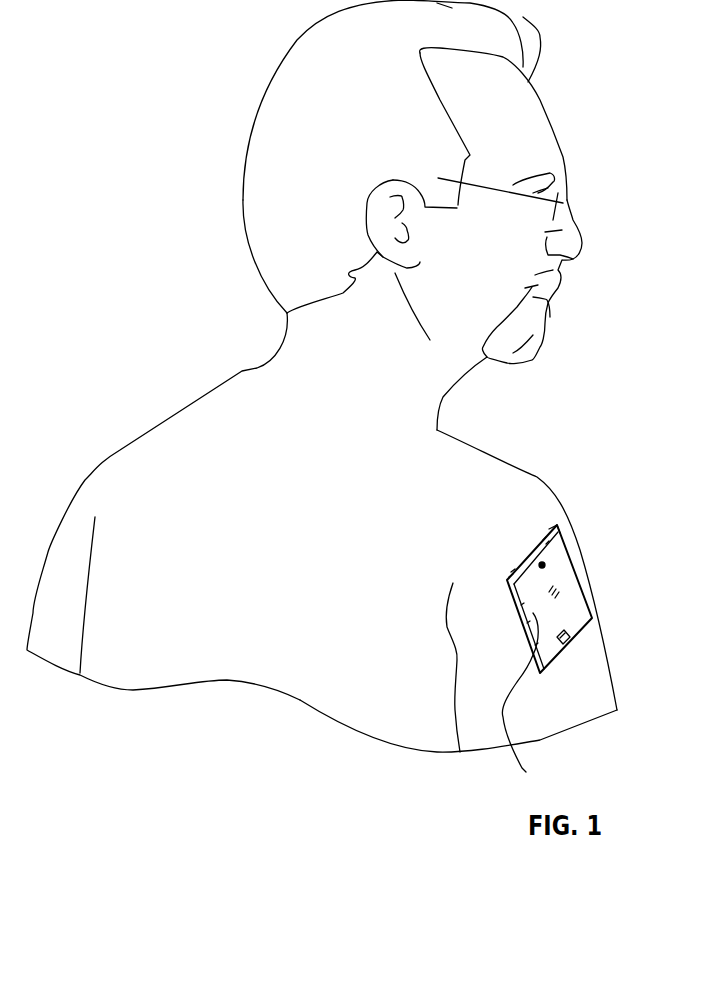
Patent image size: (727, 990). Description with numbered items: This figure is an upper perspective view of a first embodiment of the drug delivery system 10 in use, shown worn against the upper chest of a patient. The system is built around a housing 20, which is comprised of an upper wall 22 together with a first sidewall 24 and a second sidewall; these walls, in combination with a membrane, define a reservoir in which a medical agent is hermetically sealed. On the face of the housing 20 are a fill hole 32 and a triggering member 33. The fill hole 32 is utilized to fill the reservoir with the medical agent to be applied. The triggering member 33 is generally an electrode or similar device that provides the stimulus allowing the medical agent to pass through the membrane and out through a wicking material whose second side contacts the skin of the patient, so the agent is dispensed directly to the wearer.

The drug delivery system 10 is at (573, 432).
The housing 20 is at (523, 548).
The upper wall 22 is at (529, 699).
The first sidewall 24 is at (543, 527).
The fill hole 32 is at (545, 565).
The triggering member 33 is at (563, 644).